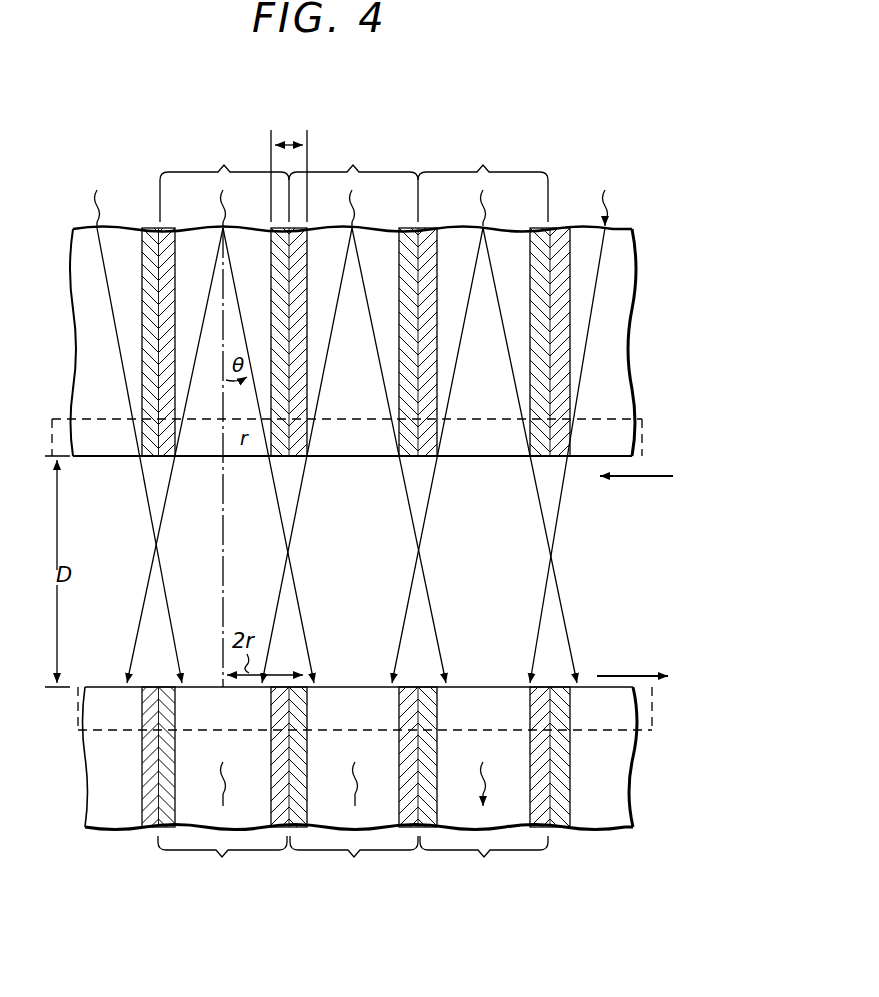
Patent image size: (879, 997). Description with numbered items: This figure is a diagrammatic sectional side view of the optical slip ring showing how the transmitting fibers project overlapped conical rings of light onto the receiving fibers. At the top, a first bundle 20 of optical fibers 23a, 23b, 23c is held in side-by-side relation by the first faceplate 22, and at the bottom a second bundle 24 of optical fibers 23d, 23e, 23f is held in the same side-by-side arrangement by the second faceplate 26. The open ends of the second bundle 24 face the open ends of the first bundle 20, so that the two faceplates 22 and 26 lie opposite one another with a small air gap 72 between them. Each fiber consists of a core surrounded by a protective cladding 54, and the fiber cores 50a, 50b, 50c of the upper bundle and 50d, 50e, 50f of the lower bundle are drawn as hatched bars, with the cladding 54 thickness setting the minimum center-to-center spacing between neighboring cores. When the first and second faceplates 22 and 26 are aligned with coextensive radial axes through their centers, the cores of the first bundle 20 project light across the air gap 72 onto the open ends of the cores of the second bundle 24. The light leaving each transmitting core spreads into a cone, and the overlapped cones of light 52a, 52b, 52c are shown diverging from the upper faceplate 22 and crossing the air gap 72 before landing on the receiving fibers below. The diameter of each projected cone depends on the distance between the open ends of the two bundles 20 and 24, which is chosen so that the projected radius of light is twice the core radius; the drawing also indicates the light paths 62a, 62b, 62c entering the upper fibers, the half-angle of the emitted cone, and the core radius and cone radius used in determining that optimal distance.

The first bundle of optical fibers 20 is at (539, 116).
The first faceplate 22 is at (645, 425).
The optical fiber 23a is at (170, 224).
The optical fiber 23b is at (409, 224).
The optical fiber 23c is at (545, 224).
The optical fiber 23d is at (160, 769).
The optical fiber 23e is at (296, 833).
The optical fiber 23f is at (537, 832).
The second bundle of optical fibers 24 is at (646, 831).
The second faceplate 26 is at (650, 705).
The fiber core 50a is at (224, 180).
The fiber core 50b is at (353, 180).
The fiber core 50c is at (483, 180).
The fiber core 50d is at (222, 860).
The fiber core 50e is at (354, 860).
The fiber core 50f is at (484, 860).
The cone of light 52a is at (215, 305).
The cone of light 52b is at (378, 396).
The cone of light 52c is at (490, 334).
The cladding 54 is at (437, 459).
The light ray 62a is at (190, 270).
The light ray 62b is at (327, 247).
The light ray 62c is at (506, 247).
The air gap 72 is at (577, 632).